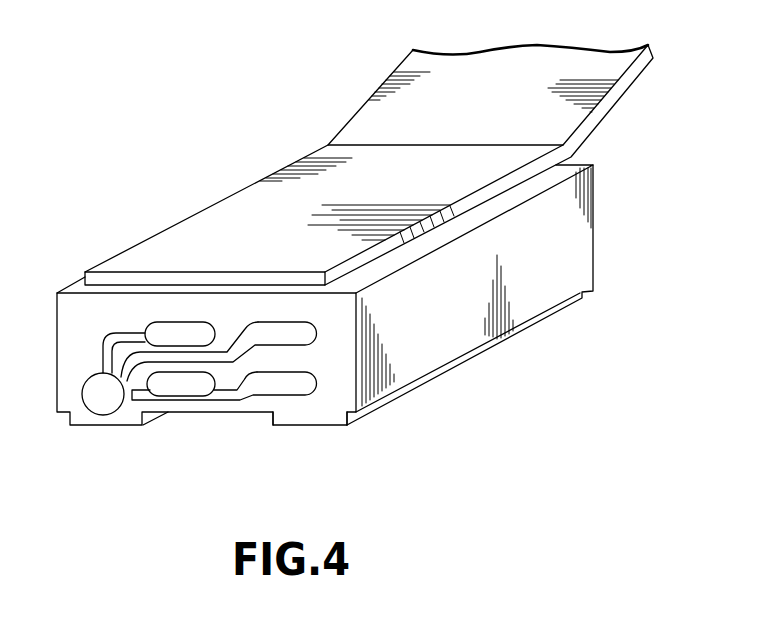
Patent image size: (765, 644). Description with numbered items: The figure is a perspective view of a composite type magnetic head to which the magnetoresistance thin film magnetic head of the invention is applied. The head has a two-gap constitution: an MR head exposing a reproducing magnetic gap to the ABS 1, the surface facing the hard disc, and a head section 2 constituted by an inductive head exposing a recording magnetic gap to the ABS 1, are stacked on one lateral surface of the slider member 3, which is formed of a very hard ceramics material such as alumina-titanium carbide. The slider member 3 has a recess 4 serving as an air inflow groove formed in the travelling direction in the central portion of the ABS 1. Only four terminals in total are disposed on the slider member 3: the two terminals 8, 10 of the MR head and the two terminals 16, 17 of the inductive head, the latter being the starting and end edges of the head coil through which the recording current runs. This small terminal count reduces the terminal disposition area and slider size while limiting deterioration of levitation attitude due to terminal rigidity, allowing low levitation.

The ABS 1 is at (323, 425).
The head section 2 is at (110, 402).
The slider member 3 is at (475, 332).
The recess 4 is at (270, 422).
The terminal 8 is at (166, 328).
The terminal 10 is at (183, 388).
The terminal 16 is at (268, 327).
The terminal 17 is at (265, 388).